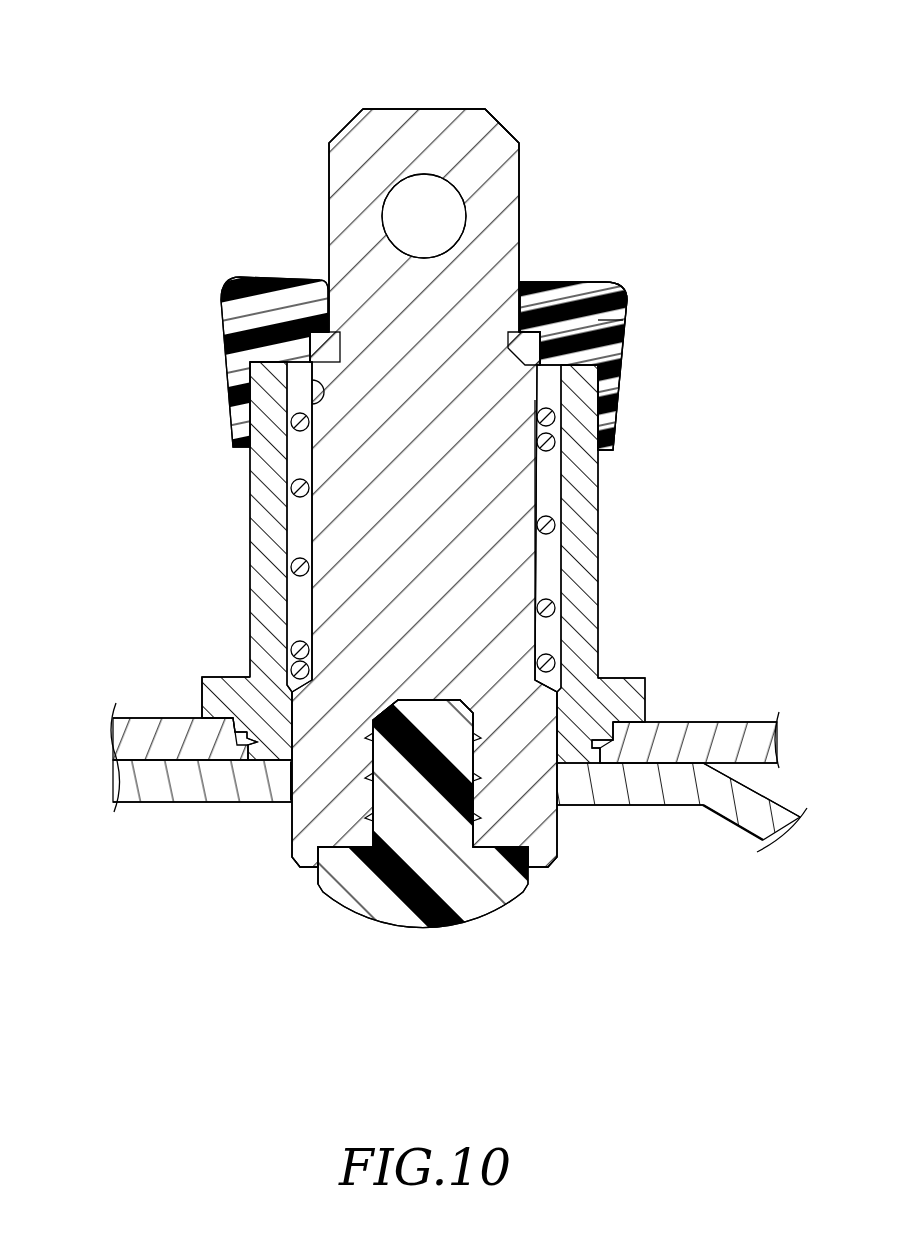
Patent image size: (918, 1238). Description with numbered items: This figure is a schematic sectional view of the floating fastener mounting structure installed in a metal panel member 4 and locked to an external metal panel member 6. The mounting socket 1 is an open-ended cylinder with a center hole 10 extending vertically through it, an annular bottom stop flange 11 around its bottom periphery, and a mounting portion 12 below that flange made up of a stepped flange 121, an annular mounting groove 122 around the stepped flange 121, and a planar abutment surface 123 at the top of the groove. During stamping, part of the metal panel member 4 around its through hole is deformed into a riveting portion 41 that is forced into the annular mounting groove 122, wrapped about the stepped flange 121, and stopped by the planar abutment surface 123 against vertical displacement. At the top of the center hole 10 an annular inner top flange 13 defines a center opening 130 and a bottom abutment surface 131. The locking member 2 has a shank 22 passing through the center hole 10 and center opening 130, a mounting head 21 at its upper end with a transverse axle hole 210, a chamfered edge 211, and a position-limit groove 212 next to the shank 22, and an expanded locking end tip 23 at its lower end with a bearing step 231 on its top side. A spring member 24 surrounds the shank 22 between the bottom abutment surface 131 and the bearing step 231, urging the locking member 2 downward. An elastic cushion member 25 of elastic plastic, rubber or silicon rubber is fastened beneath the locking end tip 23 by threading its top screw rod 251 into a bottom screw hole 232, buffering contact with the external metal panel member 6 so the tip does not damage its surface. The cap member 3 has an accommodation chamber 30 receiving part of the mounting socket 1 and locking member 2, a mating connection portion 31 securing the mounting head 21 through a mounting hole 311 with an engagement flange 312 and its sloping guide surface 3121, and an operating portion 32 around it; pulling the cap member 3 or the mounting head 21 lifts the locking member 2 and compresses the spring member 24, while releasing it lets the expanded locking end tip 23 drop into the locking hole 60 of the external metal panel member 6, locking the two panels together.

The mounting socket 1 is at (236, 534).
The center hole 10 is at (291, 590).
The annular bottom stop flange 11 is at (628, 693).
The mounting portion 12 is at (120, 693).
The stepped flange 121 is at (240, 733).
The annular mounting groove 122 is at (247, 745).
The planar abutment surface 123 is at (245, 720).
The annular inner top flange 13 is at (300, 365).
The center opening 130 is at (322, 398).
The bottom abutment surface 131 is at (320, 395).
The locking member 2 is at (520, 90).
The mounting head 21 is at (497, 190).
The axle hole 210 is at (411, 190).
The chamfered edge 211 is at (506, 124).
The position-limit groove 212 is at (585, 340).
The shank 22 is at (498, 478).
The expanded locking end tip 23 is at (537, 823).
The bearing step 231 is at (545, 672).
The bottom screw hole 232 is at (476, 805).
The spring member 24 is at (548, 608).
The elastic cushion member 25 is at (406, 920).
The top screw rod 251 is at (390, 805).
The cap member 3 is at (702, 427).
The accommodation chamber 30 is at (600, 372).
The mating connection portion 31 is at (532, 274).
The mounting hole 311 is at (533, 283).
The engagement flange 312 is at (625, 311).
The sloping guide surface 3121 is at (615, 320).
The operating portion 32 is at (608, 418).
The metal panel member 4 is at (762, 742).
The riveting portion 41 is at (612, 750).
The external metal panel member 6 is at (228, 790).
The locking hole 60 is at (288, 775).